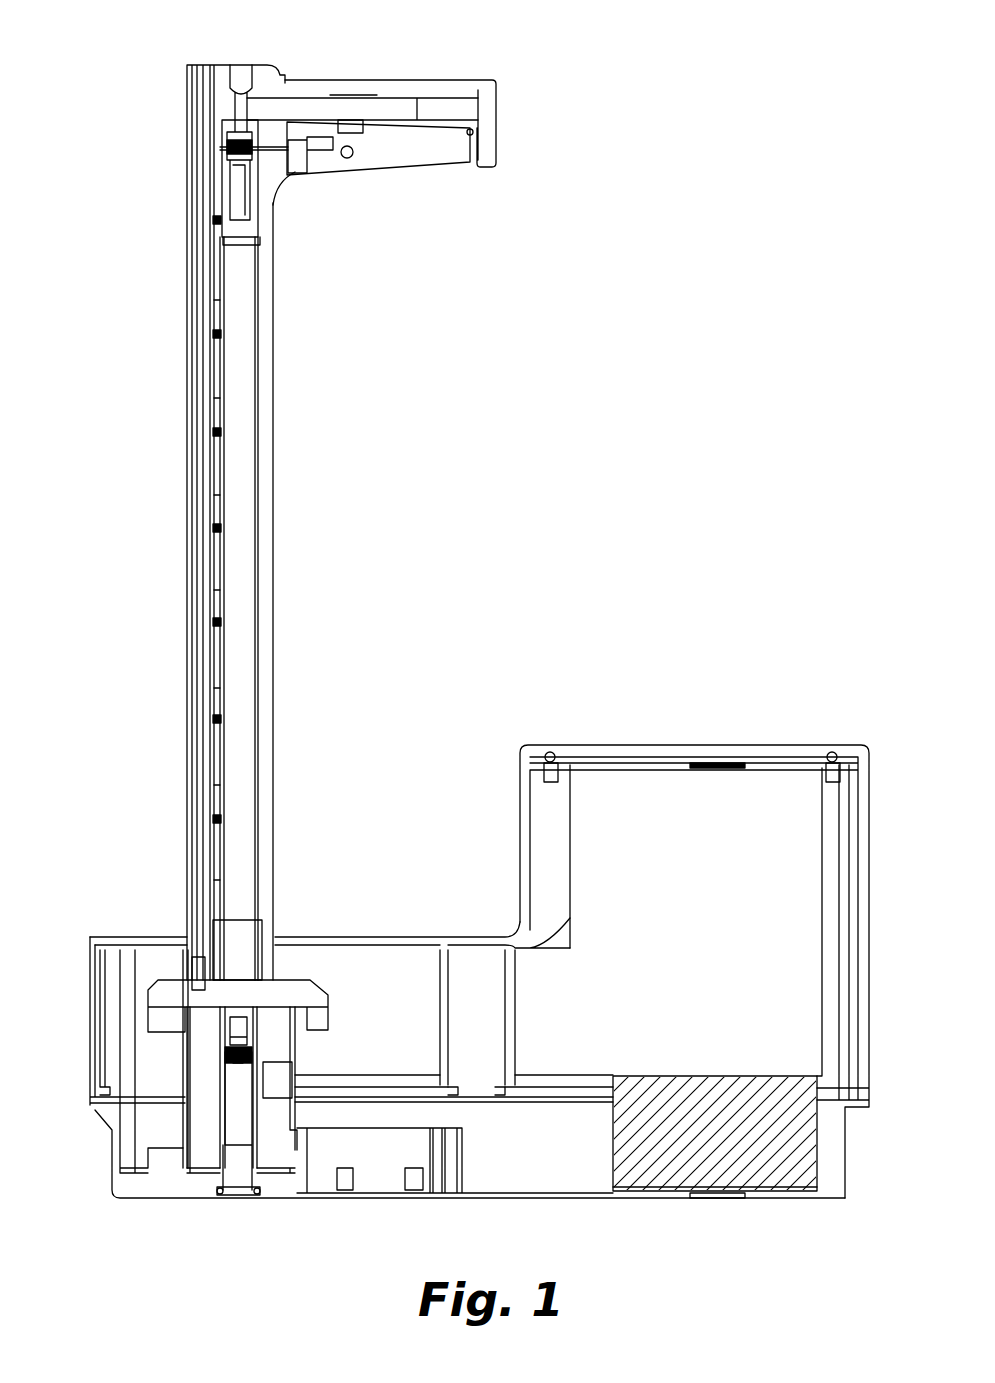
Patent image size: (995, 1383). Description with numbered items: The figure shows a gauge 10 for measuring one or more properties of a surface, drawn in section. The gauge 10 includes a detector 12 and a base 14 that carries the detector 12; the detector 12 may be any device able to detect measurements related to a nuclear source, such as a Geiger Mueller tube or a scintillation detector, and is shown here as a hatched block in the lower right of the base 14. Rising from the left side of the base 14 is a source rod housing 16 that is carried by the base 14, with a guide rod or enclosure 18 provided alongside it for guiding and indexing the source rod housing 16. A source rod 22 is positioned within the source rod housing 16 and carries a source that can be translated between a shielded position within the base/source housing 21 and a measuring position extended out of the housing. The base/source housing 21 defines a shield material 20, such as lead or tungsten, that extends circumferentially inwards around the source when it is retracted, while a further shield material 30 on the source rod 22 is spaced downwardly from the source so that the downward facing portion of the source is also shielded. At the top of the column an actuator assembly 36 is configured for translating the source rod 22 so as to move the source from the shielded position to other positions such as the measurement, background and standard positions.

The gauge 10 is at (460, 690).
The detector 12 is at (677, 1103).
The base 14 is at (347, 1200).
The source rod housing 16 is at (262, 445).
The guide rod or enclosure 18 is at (183, 388).
The shield material 20 is at (203, 1094).
The base/source housing 21 is at (197, 1180).
The source rod 22 is at (238, 520).
The shield material 30 is at (238, 1142).
The actuator assembly 36 is at (350, 68).